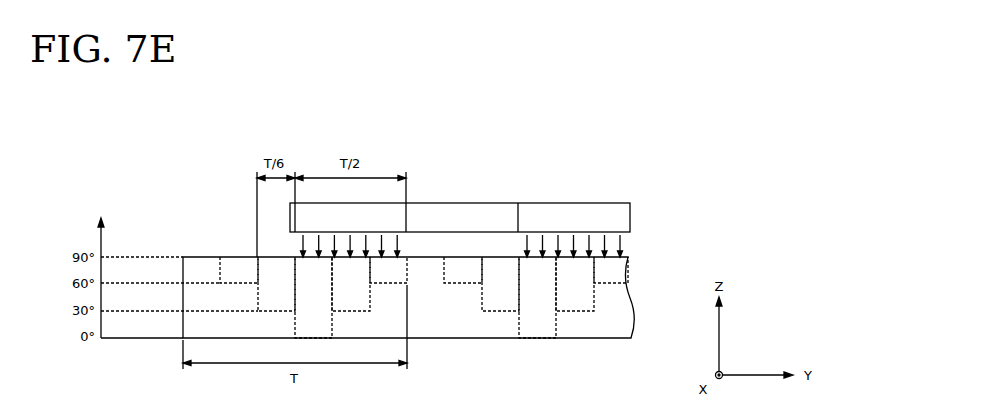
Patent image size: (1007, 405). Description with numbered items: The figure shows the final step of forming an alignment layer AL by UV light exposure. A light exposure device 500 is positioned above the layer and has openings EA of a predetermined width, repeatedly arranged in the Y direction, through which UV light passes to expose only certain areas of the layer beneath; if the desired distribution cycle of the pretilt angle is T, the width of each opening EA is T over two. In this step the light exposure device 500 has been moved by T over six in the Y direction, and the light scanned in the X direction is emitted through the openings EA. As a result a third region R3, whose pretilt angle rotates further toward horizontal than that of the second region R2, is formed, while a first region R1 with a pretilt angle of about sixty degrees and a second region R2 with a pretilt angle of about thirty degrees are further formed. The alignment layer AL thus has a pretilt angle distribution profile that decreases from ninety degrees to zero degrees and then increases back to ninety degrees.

The light exposure device 500 is at (630, 217).
The alignment layer AL is at (618, 310).
The openings EA is at (462, 233).
The first region R1 is at (424, 270).
The second region R2 is at (426, 284).
The third region R3 is at (425, 297).